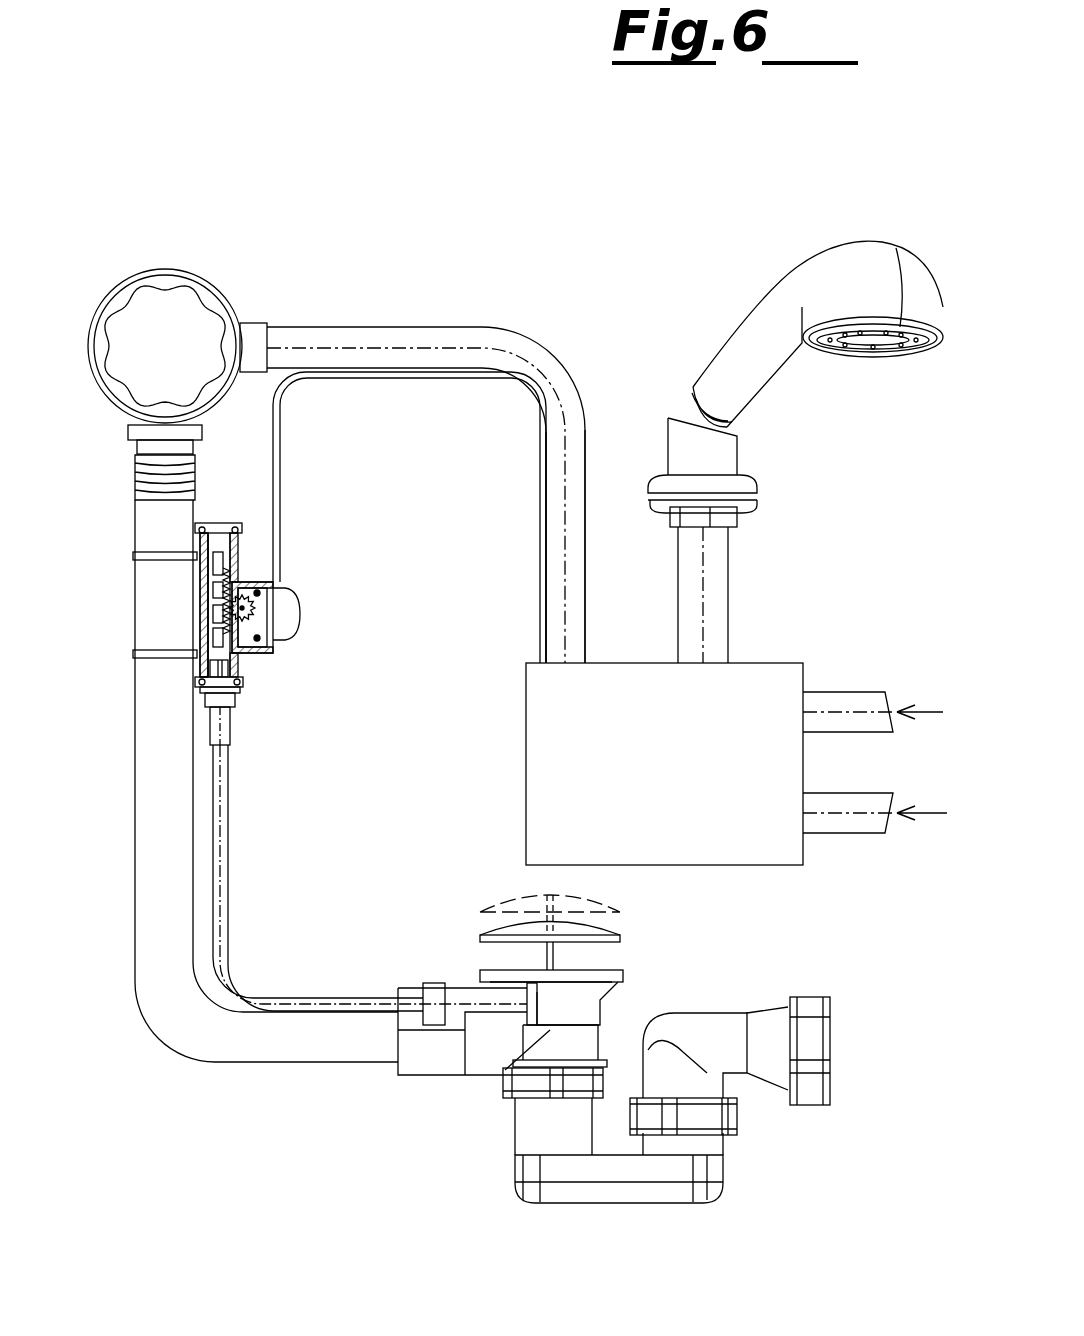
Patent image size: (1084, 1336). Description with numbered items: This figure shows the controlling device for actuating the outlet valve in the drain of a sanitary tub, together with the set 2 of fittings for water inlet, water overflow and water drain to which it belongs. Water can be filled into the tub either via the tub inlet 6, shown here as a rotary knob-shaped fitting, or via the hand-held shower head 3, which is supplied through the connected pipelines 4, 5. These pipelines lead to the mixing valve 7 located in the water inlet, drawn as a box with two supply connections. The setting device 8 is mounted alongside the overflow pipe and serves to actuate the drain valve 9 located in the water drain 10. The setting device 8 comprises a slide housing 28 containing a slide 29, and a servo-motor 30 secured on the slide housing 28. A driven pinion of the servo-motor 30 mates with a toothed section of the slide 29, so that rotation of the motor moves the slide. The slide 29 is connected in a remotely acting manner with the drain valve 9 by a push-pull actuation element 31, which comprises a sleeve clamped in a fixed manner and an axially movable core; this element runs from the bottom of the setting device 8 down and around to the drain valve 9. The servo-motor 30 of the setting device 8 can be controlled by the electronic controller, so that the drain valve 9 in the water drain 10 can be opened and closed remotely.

The set of fittings 2 is at (480, 862).
The hand-held shower head 3 is at (755, 325).
The pipeline 4 is at (718, 595).
The pipeline 5 is at (578, 440).
The tub inlet 6 is at (172, 300).
The mixing valve 7 is at (736, 764).
The setting device 8 is at (232, 500).
The drain valve 9 is at (505, 932).
The water drain 10 is at (525, 1128).
The slide housing 28 is at (237, 545).
The slide 29 is at (232, 578).
The servo-motor 30 is at (248, 624).
The push-pull actuation element 31 is at (240, 758).